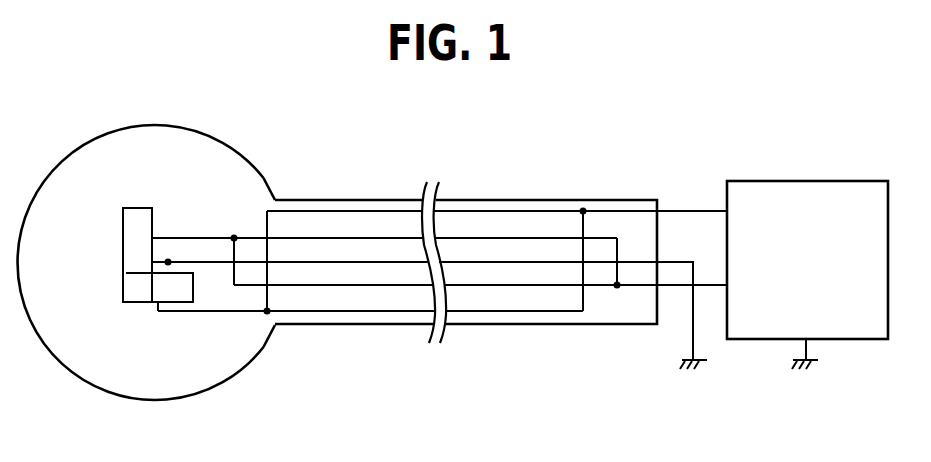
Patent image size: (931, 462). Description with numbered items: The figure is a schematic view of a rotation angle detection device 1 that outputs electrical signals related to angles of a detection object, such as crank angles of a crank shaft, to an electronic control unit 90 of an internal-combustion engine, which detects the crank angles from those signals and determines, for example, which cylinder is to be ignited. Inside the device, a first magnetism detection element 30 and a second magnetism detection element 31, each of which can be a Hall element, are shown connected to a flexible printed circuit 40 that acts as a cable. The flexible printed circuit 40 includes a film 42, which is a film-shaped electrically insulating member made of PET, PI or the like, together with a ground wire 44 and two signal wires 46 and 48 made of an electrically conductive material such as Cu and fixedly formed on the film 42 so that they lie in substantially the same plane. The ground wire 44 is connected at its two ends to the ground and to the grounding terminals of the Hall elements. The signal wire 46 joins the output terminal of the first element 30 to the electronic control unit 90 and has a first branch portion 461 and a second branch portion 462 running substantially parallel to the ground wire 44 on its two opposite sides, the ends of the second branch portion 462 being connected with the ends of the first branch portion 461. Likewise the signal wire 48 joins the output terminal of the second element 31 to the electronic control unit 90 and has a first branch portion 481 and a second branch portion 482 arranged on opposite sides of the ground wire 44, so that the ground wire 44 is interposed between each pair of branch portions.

The rotation angle detection device 1 is at (755, 107).
The first magnetism detection element 30 is at (138, 217).
The second magnetism detection element 31 is at (137, 302).
The flexible printed circuit 40 is at (65, 162).
The film 42 is at (92, 370).
The ground wire 44 is at (185, 262).
The signal wire 46 is at (213, 238).
The signal wire 48 is at (191, 312).
The first branch portion 461 is at (318, 238).
The second branch portion 462 is at (313, 286).
The first branch portion 481 is at (372, 311).
The second branch portion 482 is at (372, 211).
The electronic control unit 90 is at (788, 181).